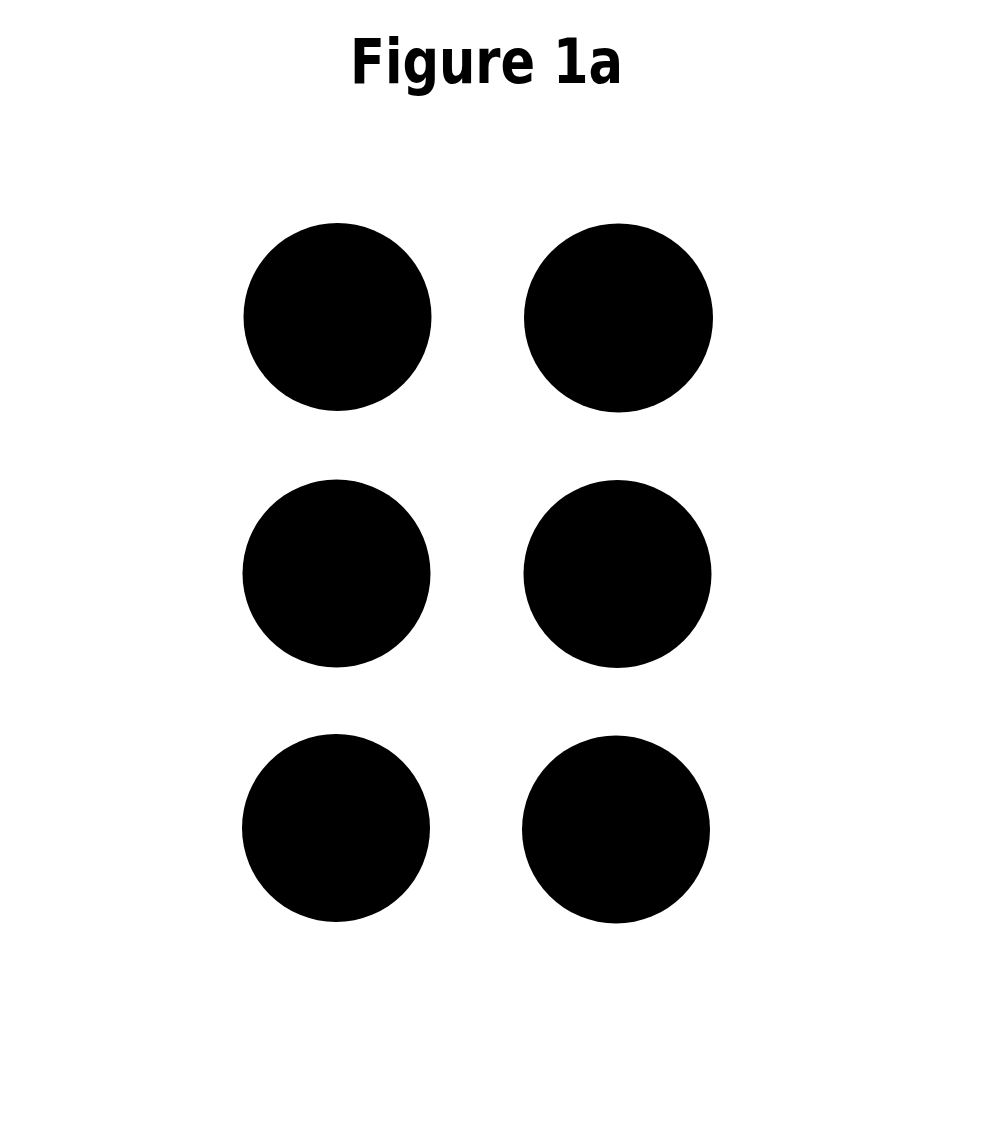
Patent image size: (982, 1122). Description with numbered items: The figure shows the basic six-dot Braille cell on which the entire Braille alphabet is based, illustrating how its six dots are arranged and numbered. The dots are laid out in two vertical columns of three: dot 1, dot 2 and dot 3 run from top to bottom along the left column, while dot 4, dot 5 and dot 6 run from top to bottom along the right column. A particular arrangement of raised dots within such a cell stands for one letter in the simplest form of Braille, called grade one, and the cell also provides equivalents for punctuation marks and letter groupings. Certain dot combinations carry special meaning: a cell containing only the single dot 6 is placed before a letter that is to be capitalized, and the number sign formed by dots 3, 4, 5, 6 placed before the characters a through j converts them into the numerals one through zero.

The dot 1 is at (247, 317).
The dot 2 is at (243, 574).
The dot 3 is at (243, 828).
The dot 4 is at (711, 318).
The dot 5 is at (712, 574).
The dot 6 is at (710, 830).